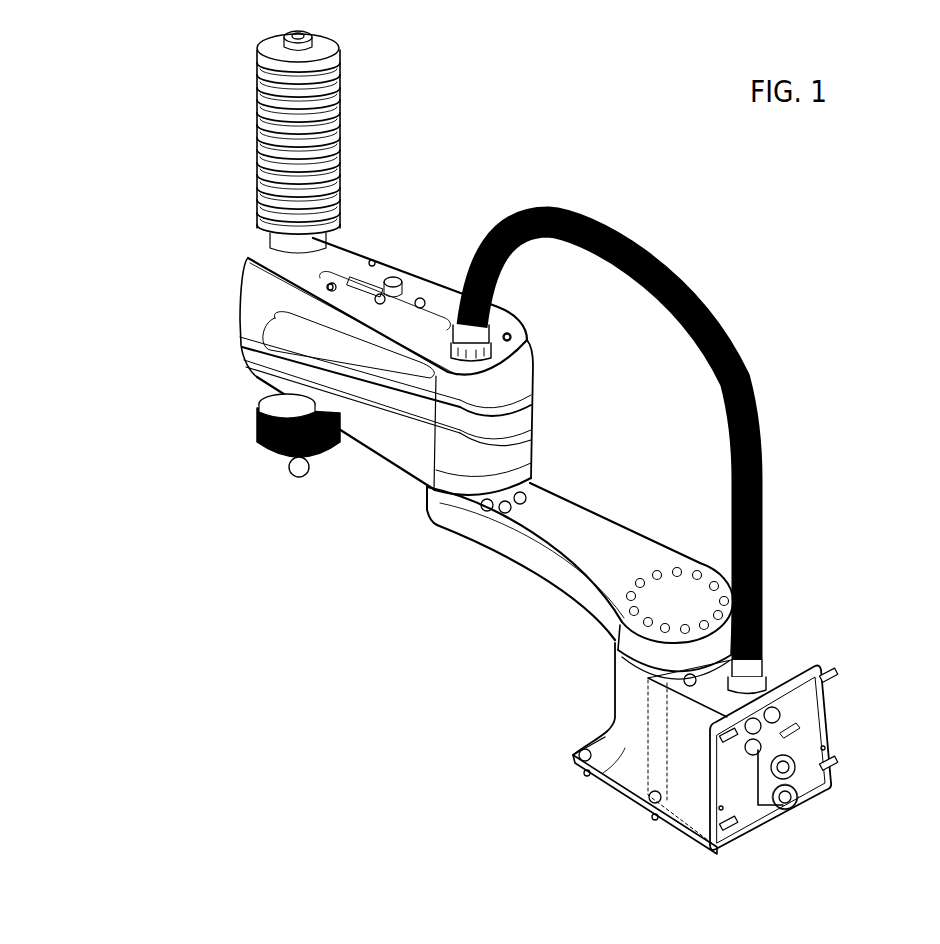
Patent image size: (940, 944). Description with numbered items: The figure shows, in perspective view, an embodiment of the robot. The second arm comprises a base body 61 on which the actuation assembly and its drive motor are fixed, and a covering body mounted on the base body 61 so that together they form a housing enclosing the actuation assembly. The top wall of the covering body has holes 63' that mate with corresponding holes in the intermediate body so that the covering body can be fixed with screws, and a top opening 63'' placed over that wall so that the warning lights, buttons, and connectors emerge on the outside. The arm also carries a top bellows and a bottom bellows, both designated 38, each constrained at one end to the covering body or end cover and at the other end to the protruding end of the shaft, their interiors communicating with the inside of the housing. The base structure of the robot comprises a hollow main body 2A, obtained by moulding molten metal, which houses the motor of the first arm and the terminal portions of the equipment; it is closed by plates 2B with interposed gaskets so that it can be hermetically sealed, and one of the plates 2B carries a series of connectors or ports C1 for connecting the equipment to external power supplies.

The bellows 38 is at (312, 147).
The base body 61 is at (541, 415).
The holes 63' is at (388, 302).
The top opening 63'' is at (599, 439).
The hollow main body 2A is at (602, 782).
The plates 2B is at (742, 812).
The connectors or ports C1 is at (806, 809).